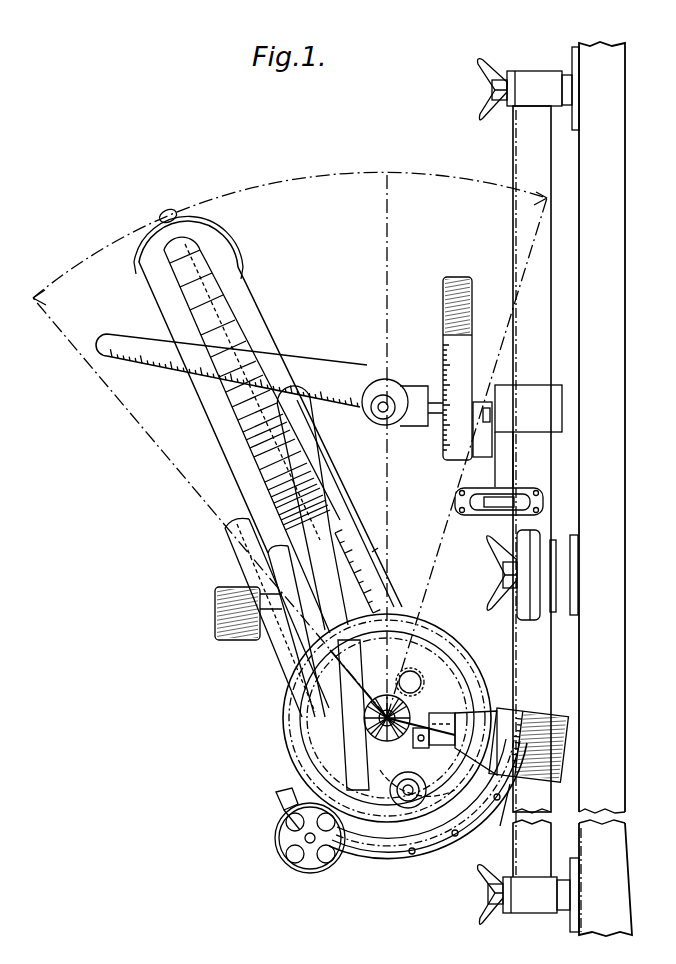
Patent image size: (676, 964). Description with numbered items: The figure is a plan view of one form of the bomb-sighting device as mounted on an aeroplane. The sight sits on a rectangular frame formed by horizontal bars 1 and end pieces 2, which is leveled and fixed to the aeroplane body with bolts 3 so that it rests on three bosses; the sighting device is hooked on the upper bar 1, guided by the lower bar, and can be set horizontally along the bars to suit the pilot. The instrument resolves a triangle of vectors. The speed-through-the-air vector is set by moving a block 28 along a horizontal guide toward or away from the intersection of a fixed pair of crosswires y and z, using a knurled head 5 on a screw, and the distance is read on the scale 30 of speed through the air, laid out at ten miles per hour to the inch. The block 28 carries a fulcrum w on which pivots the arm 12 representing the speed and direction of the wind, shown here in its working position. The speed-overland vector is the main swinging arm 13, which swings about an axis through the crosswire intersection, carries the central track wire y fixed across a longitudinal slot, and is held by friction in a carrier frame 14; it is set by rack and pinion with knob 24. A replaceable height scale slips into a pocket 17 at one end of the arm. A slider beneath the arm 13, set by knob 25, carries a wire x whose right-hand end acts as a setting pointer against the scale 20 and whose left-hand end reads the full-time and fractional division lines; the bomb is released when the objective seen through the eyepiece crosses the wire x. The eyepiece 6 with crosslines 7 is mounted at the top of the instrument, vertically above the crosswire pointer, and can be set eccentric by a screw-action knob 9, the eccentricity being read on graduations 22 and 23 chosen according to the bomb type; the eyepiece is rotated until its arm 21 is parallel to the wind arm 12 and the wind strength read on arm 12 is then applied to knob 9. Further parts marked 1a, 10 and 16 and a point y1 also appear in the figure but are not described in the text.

The horizontal bars 1 is at (533, 832).
The bracket 1a is at (480, 484).
The end pieces 2 is at (524, 80).
The bolts 3 is at (490, 88).
The knurled head 5 is at (448, 282).
The eyepiece 6 is at (364, 716).
The crosslines 7 is at (418, 686).
The knob 9 is at (568, 716).
The slide block 10 is at (424, 744).
The wind arm 12 is at (110, 340).
The swinging sighting arm 13 is at (178, 362).
The carrier frame 14 is at (399, 862).
The time bar 16 is at (340, 742).
The pocket 17 is at (167, 212).
The scale 20 is at (372, 552).
The arm 21 is at (458, 711).
The graduations 22 is at (468, 830).
The graduations 23 is at (510, 790).
The knob 24 is at (292, 862).
The knob 25 is at (215, 600).
The block 28 is at (414, 392).
The scale of speed through the air 30 is at (446, 462).
The fulcrum w is at (388, 380).
The wire x is at (305, 625).
The crosswire y is at (252, 548).
The pointer y1 is at (285, 800).
The crosswire z is at (378, 728).